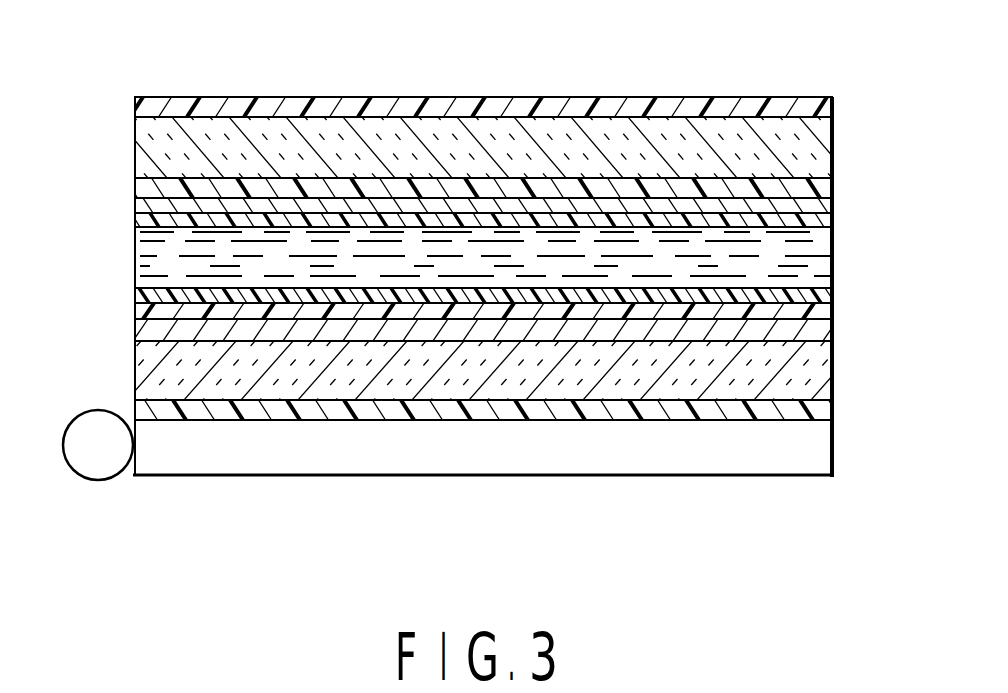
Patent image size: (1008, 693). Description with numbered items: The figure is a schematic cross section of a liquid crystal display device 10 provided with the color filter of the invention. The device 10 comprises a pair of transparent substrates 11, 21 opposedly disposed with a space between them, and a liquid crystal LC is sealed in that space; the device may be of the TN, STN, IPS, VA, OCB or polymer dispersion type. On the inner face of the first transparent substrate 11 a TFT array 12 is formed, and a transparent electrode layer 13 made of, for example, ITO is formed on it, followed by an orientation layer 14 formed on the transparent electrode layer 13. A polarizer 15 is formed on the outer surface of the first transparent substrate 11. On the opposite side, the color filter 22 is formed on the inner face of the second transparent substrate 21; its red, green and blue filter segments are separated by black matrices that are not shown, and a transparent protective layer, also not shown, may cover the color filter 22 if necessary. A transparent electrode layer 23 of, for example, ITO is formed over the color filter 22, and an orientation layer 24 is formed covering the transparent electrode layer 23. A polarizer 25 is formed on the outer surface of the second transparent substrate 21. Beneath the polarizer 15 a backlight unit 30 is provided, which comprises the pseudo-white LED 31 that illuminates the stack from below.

The liquid crystal display device 10 is at (562, 66).
The first transparent substrate 11 is at (836, 375).
The TFT array 12 is at (836, 328).
The transparent electrode layer 13 is at (140, 311).
The orientation layer 14 is at (836, 294).
The polarizer 15 is at (836, 410).
The second transparent substrate 21 is at (140, 152).
The color filter 22 is at (836, 186).
The transparent electrode layer 23 is at (140, 205).
The orientation layer 24 is at (836, 221).
The polarizer 25 is at (836, 106).
The liquid crystal LC is at (140, 259).
The backlight unit 30 is at (533, 480).
The pseudo-white LED 31 is at (72, 453).